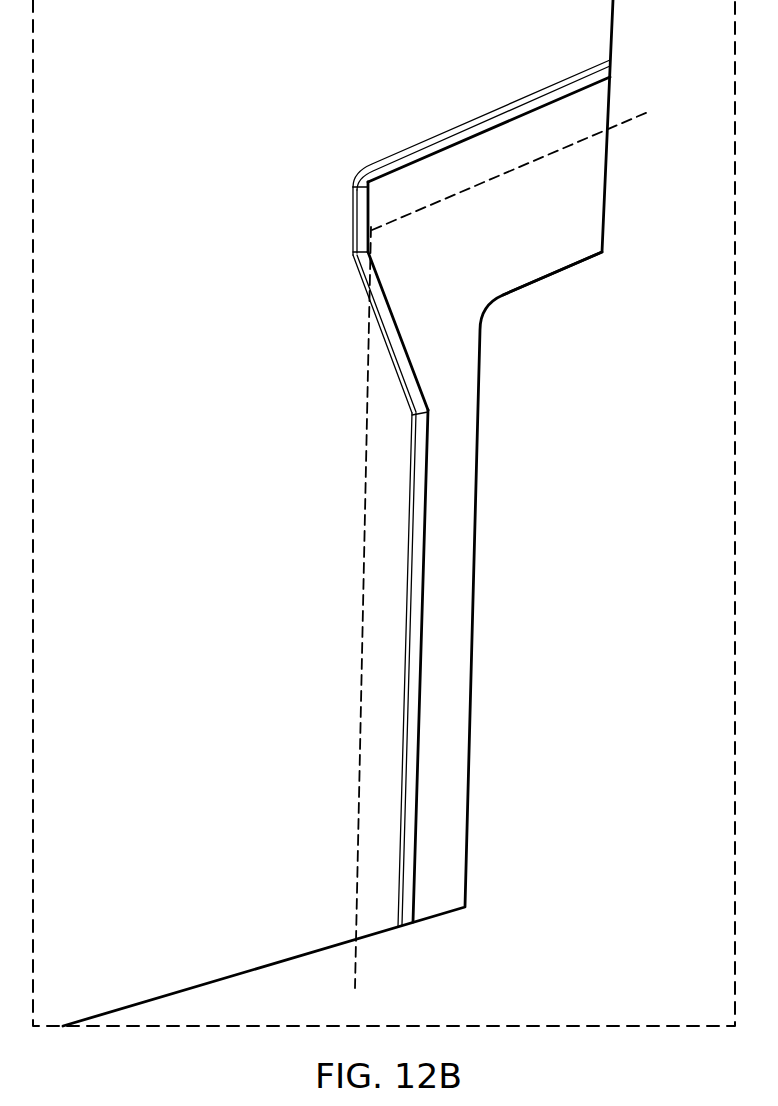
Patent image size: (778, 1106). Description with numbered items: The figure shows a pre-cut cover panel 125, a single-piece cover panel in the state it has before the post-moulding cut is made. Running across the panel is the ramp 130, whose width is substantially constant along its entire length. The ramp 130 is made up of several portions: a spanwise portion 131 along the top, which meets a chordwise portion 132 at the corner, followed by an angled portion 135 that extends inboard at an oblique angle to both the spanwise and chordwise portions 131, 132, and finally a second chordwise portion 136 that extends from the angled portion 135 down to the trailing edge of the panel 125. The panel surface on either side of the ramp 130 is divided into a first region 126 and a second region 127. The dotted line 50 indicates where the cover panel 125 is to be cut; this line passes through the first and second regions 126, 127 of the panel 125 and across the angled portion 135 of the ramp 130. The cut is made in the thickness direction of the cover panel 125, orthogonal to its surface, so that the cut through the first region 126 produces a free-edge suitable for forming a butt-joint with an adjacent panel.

The dotted line 50 is at (363, 607).
The pre-cut cover panel 125 is at (543, 883).
The first region 126 is at (219, 532).
The second region 127 is at (578, 113).
The ramp 130 is at (447, 142).
The spanwise portion 131 is at (515, 115).
The chordwise portion 132 is at (358, 227).
The angled portion 135 is at (385, 317).
The second chordwise portion 136 is at (417, 637).